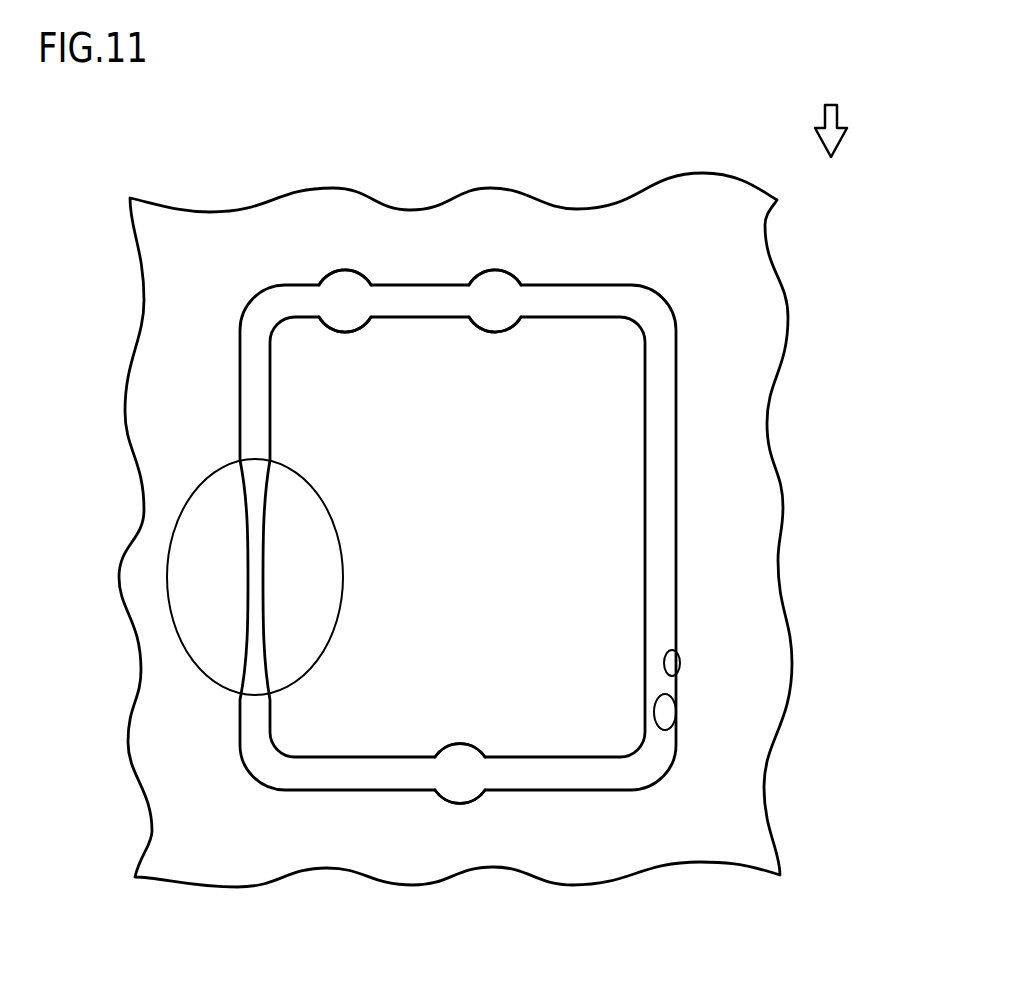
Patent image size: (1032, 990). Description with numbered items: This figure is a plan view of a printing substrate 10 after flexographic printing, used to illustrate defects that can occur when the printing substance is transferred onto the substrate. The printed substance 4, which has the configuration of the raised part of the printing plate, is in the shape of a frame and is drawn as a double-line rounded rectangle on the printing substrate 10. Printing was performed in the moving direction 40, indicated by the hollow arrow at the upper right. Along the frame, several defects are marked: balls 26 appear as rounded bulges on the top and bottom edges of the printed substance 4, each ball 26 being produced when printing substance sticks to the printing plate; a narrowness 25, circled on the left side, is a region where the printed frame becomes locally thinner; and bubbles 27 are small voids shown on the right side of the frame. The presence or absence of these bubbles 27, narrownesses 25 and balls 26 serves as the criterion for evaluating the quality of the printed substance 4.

The printed substance 4 is at (660, 404).
The printing substrate 10 is at (750, 817).
The narrowness 25 is at (167, 577).
The ball 26 is at (345, 292).
The bubble 27 is at (672, 663).
The moving direction 40 is at (832, 112).